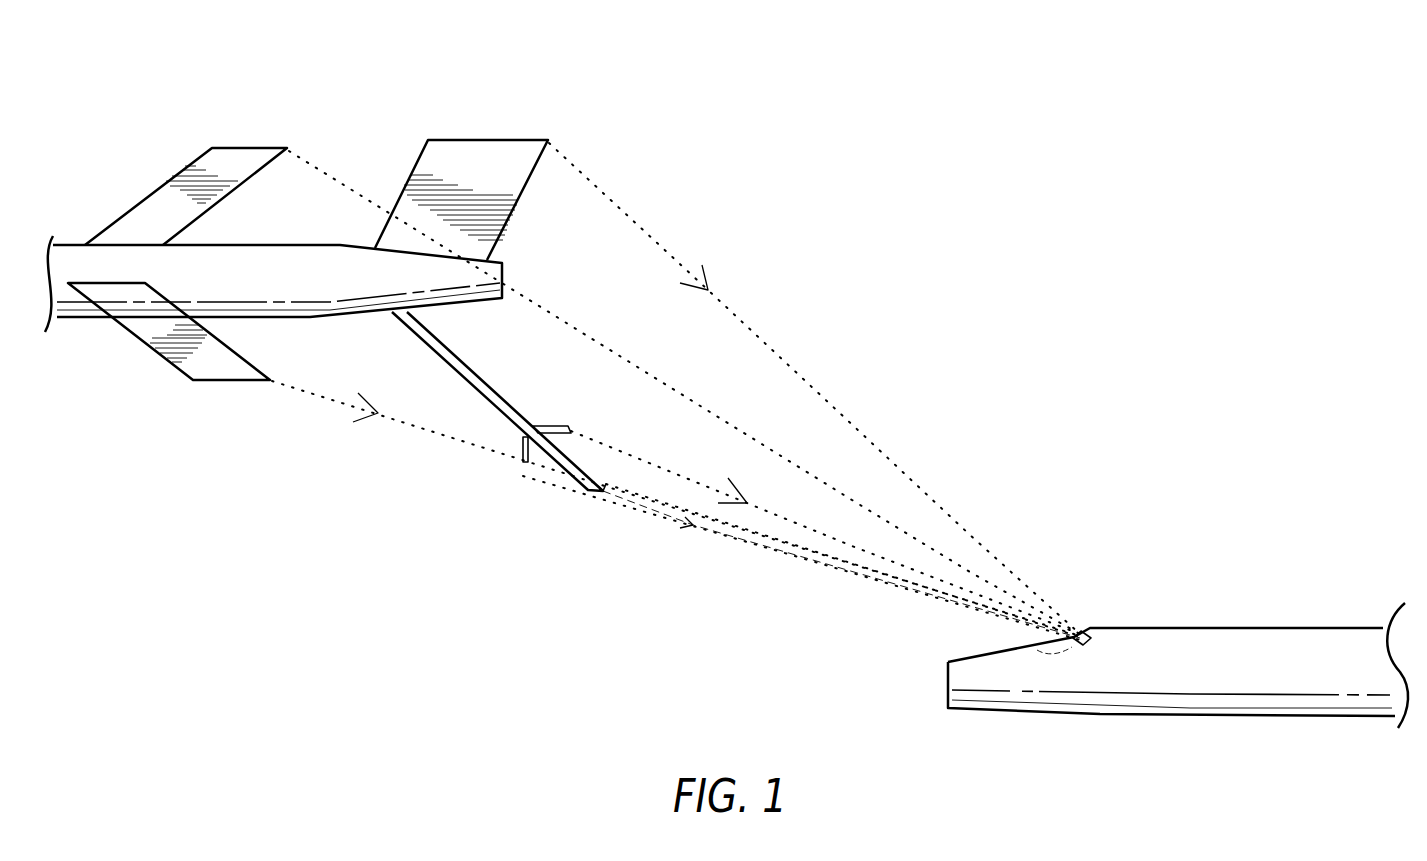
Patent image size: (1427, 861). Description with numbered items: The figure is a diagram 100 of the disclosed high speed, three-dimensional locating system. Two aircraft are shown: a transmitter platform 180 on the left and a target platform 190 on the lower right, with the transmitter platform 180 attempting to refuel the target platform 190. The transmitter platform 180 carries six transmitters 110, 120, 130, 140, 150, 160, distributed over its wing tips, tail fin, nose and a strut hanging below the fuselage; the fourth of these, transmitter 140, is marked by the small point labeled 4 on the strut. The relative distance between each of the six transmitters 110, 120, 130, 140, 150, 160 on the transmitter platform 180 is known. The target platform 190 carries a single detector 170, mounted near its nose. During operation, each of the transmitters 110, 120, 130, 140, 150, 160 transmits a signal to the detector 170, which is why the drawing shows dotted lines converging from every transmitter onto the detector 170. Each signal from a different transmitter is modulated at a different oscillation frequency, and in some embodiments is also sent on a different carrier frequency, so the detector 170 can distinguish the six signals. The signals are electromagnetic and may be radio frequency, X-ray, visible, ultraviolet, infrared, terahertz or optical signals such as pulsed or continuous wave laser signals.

The diagram 100 is at (1070, 240).
The transmitter 110 is at (275, 382).
The transmitter 120 is at (297, 120).
The transmitter 130 is at (557, 110).
The transmitter 140 is at (522, 475).
The transmitter 150 is at (567, 427).
The transmitter 160 is at (607, 477).
The detector 170 is at (1086, 630).
The transmitter platform 180 is at (134, 171).
The target platform 190 is at (1282, 628).
The target point marker on strut 4 is at (520, 448).